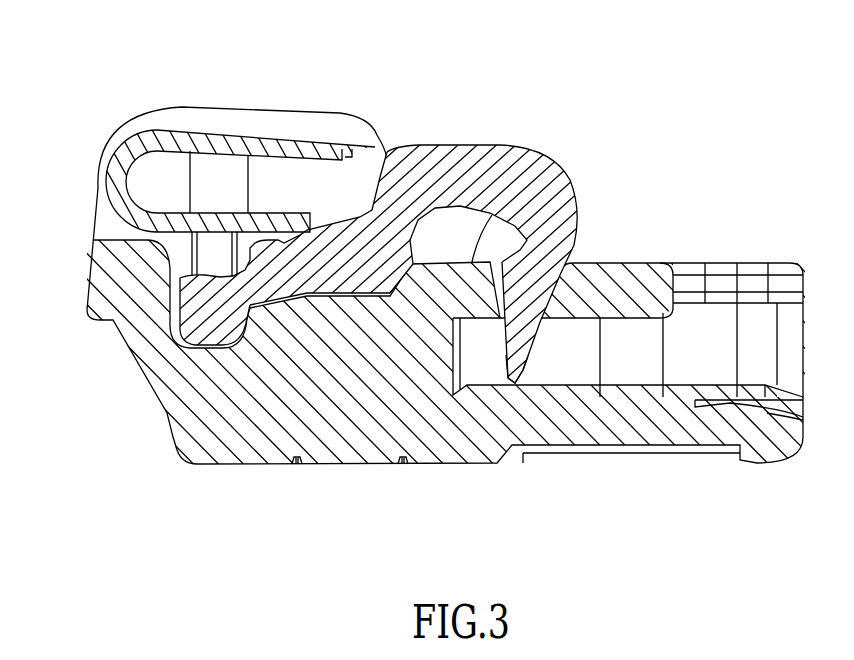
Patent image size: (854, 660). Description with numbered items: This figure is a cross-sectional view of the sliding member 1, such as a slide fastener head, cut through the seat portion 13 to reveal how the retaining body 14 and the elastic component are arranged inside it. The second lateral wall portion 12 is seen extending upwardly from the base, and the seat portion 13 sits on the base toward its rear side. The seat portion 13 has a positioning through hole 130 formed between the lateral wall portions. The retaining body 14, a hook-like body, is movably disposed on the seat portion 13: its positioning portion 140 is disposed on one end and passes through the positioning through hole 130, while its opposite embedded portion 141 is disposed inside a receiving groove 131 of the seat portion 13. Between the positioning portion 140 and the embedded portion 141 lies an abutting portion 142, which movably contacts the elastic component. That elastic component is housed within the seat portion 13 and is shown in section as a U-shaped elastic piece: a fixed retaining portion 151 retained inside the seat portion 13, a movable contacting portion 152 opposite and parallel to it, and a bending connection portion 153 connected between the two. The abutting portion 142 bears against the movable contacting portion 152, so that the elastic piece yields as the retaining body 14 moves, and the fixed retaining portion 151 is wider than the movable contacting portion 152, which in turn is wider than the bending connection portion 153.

The sliding member 1 is at (792, 36).
The second lateral wall portion 12 is at (723, 282).
The seat portion 13 is at (107, 267).
The receiving groove 131 is at (172, 323).
The retaining body 14 is at (460, 168).
The positioning through hole 130 is at (570, 288).
The positioning portion 140 is at (518, 350).
The embedded portion 141 is at (220, 322).
The abutting portion 142 is at (343, 232).
The fixed retaining portion 151 is at (262, 137).
The movable contacting portion 152 is at (300, 212).
The bending connection portion 153 is at (112, 185).